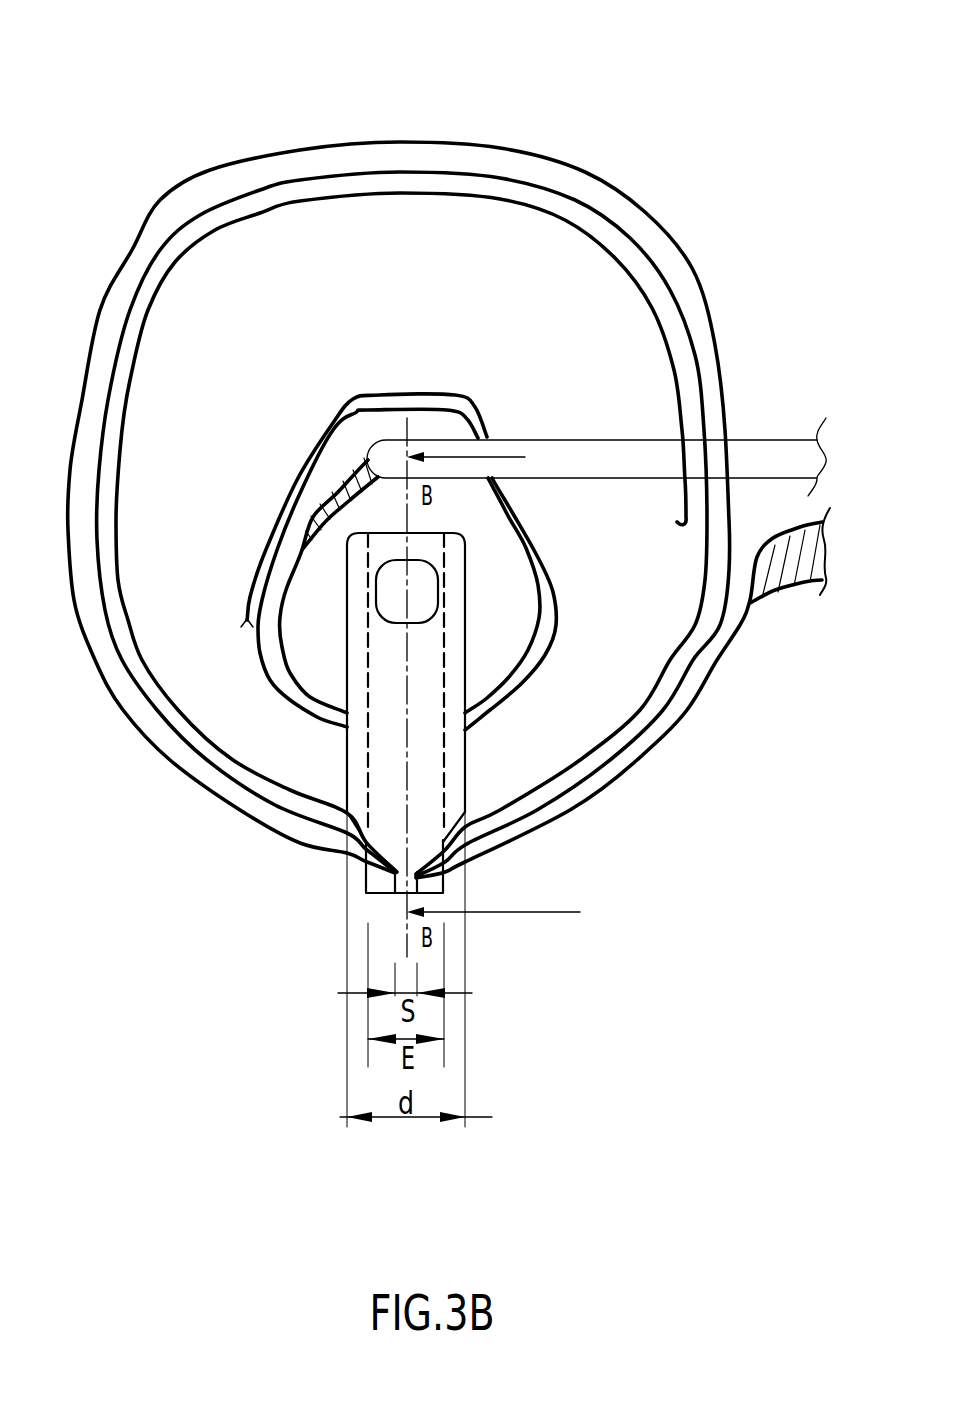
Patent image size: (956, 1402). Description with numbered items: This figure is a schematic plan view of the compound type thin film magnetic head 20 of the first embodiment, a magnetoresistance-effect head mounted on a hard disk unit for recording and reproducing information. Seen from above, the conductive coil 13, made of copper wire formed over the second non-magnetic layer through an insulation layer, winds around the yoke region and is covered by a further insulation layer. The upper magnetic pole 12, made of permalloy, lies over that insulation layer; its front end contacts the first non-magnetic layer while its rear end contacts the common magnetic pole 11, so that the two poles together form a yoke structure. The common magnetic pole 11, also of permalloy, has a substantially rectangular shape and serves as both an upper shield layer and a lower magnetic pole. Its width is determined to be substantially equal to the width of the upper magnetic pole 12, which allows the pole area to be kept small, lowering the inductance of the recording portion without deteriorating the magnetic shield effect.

The compound type thin film magnetic head 20 is at (224, 134).
The conductive coil 13 is at (593, 178).
The upper magnetic pole 12 is at (465, 755).
The common magnetic pole 11 is at (367, 880).